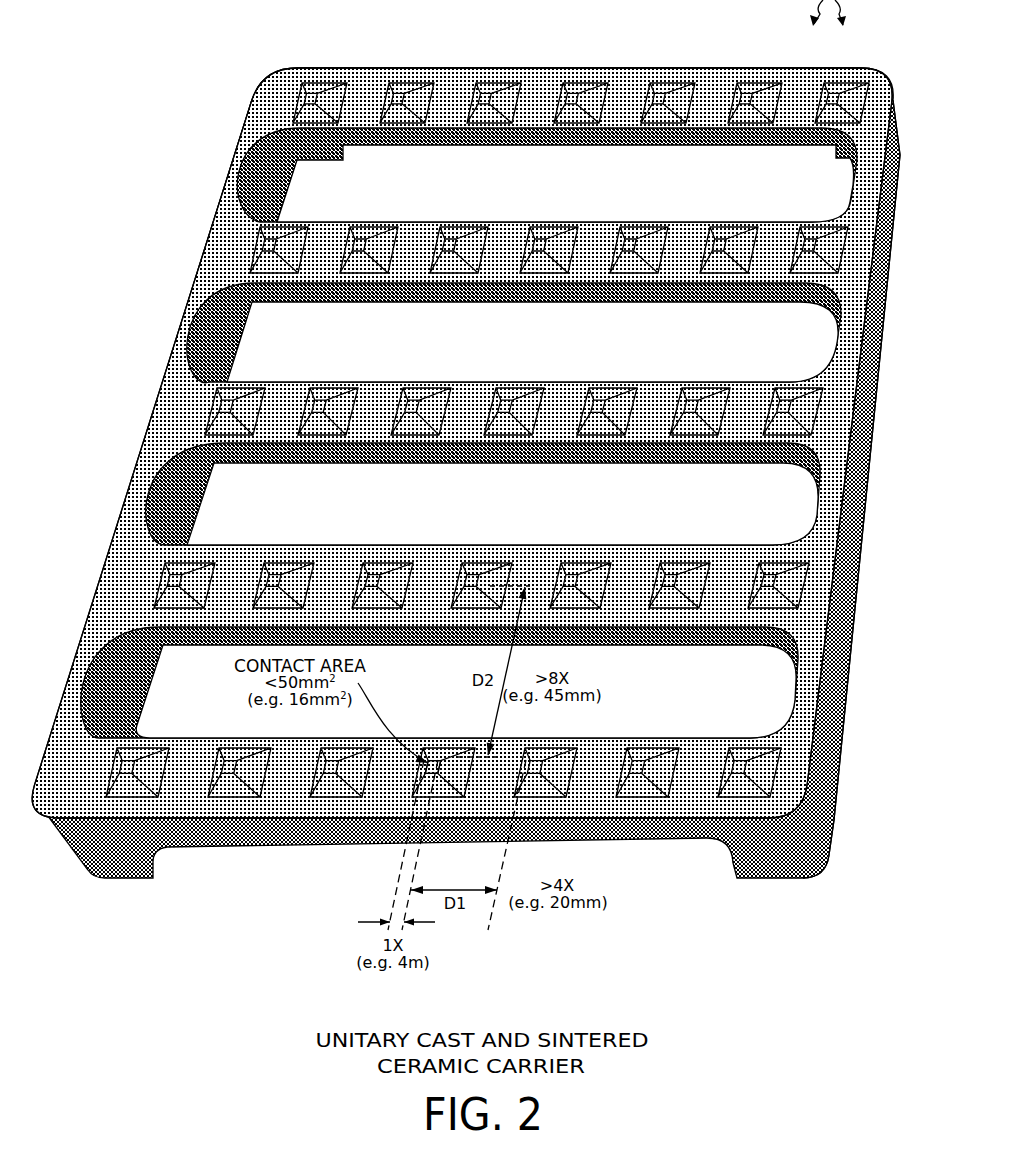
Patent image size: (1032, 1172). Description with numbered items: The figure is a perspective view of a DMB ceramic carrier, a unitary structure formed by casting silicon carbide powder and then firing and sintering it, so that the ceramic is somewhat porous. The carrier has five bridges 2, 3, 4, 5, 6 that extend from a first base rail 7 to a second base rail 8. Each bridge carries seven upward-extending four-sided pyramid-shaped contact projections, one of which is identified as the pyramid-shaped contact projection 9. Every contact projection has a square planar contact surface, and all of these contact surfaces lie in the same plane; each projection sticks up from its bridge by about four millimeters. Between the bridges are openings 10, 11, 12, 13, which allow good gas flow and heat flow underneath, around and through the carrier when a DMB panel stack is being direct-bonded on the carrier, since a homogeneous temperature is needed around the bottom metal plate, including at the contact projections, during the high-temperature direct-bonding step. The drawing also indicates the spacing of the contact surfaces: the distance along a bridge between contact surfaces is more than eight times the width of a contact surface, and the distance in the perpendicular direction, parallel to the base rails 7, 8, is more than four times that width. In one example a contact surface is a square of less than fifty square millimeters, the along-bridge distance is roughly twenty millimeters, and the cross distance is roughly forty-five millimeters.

The bridge 2 is at (471, 453).
The bridge 3 is at (540, 226).
The bridge 4 is at (506, 383).
The bridge 5 is at (473, 554).
The bridge 6 is at (434, 744).
The first base rail 7 is at (183, 515).
The second base rail 8 is at (866, 488).
The pyramid-shaped contact projection 9 is at (427, 771).
The opening 10 is at (739, 187).
The opening 11 is at (706, 345).
The opening 12 is at (483, 494).
The opening 13 is at (641, 695).